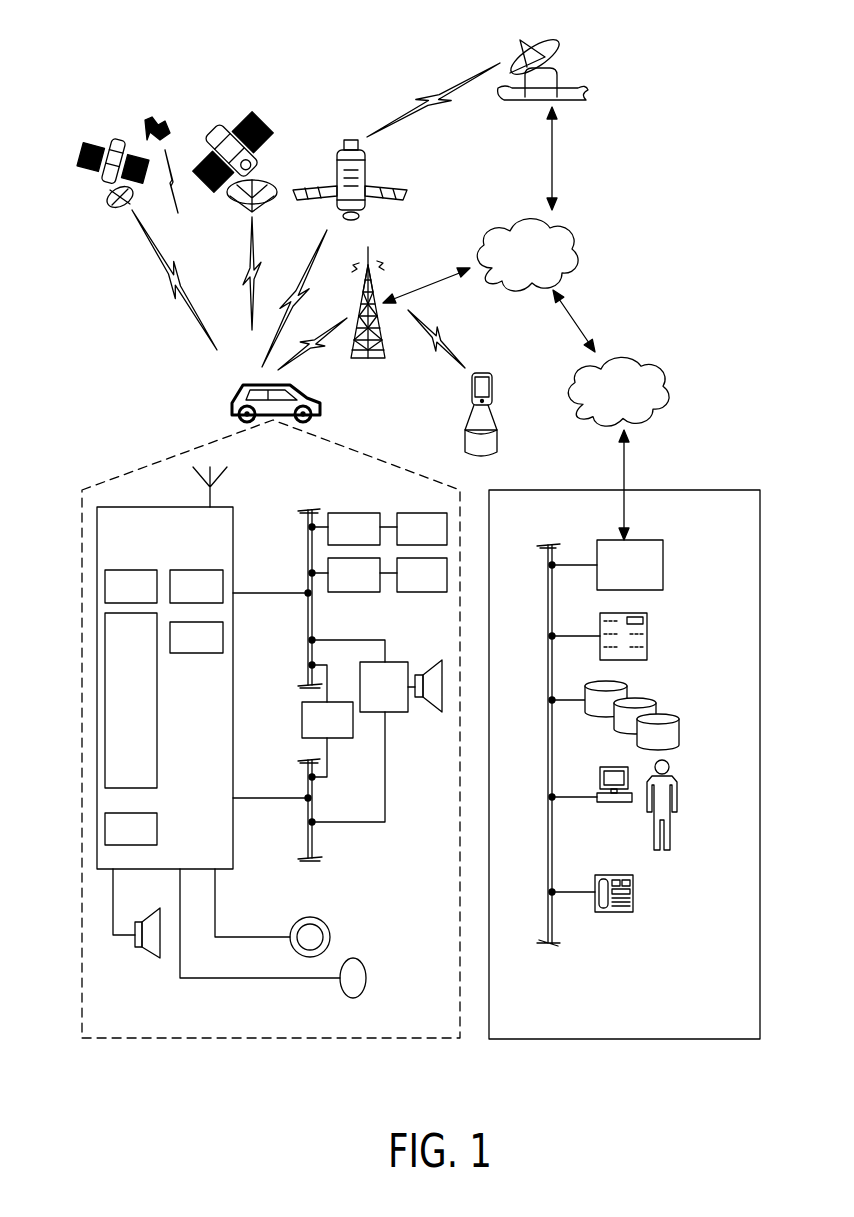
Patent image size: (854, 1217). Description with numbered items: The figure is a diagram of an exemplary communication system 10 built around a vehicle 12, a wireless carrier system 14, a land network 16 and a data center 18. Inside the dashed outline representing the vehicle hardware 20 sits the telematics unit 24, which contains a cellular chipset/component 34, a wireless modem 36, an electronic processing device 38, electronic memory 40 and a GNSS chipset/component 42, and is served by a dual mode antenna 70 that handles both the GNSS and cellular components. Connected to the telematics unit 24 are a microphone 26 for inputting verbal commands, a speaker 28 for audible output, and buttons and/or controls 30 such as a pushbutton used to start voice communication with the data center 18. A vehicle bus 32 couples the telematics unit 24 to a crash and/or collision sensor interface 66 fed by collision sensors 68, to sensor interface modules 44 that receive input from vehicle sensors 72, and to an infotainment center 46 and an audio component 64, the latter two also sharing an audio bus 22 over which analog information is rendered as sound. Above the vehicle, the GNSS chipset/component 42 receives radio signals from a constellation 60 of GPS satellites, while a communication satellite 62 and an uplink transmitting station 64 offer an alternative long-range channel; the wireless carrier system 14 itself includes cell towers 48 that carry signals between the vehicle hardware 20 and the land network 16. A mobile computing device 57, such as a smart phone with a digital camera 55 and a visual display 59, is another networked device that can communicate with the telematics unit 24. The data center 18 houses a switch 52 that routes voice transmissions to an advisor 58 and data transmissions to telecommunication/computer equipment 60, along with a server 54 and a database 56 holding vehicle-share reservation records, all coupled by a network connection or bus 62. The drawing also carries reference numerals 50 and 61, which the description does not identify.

The communication system 10 is at (128, 408).
The vehicle 12 is at (233, 403).
The wireless carrier system 14 is at (610, 235).
The land network 16 is at (672, 387).
The data center 18 is at (625, 1040).
The vehicle hardware 20 is at (255, 1040).
The audio bus 22 is at (305, 838).
The telematics unit 24 is at (233, 717).
The microphone 26 is at (357, 957).
The speaker 28 is at (150, 957).
The buttons and/or controls 30 is at (320, 915).
The vehicle bus 32 is at (315, 610).
The cellular chipset/component 34 is at (132, 570).
The wireless modem 36 is at (197, 570).
The electronic processing device 38 is at (157, 700).
The electronic memory 40 is at (157, 827).
The GNSS chipset/component 42 is at (223, 638).
The sensor interface modules 44 is at (372, 592).
The infotainment center 46 is at (302, 725).
The cell towers 48 is at (382, 288).
The mobile switching center 50 is at (477, 233).
The switch 52 is at (665, 565).
The server 54 is at (648, 638).
The digital camera 55 is at (478, 373).
The database 56 is at (680, 733).
The mobile computing device 57 is at (470, 387).
The advisor 58 is at (680, 798).
The visual display 59 is at (492, 388).
The constellation of GPS satellites 60 is at (285, 156).
The user 61 is at (498, 435).
The communication satellite 62 is at (370, 165).
The uplink transmitting station 64 is at (572, 80).
The crash and/or collision sensor interface module 66 is at (345, 510).
The collision sensors 68 is at (410, 510).
The dual mode antenna 70 is at (220, 495).
The vehicle sensors 72 is at (440, 592).